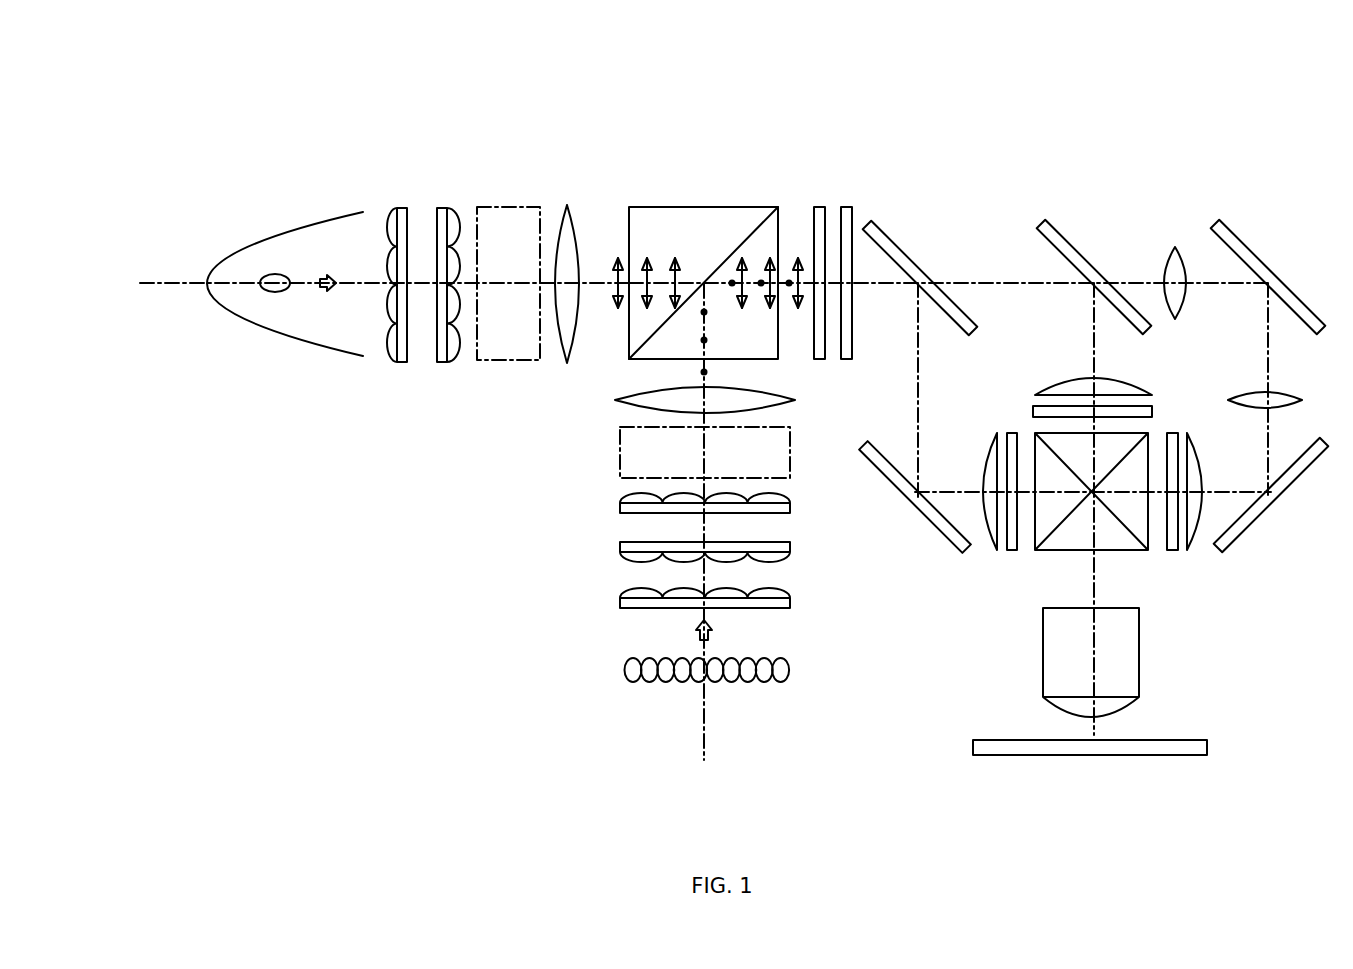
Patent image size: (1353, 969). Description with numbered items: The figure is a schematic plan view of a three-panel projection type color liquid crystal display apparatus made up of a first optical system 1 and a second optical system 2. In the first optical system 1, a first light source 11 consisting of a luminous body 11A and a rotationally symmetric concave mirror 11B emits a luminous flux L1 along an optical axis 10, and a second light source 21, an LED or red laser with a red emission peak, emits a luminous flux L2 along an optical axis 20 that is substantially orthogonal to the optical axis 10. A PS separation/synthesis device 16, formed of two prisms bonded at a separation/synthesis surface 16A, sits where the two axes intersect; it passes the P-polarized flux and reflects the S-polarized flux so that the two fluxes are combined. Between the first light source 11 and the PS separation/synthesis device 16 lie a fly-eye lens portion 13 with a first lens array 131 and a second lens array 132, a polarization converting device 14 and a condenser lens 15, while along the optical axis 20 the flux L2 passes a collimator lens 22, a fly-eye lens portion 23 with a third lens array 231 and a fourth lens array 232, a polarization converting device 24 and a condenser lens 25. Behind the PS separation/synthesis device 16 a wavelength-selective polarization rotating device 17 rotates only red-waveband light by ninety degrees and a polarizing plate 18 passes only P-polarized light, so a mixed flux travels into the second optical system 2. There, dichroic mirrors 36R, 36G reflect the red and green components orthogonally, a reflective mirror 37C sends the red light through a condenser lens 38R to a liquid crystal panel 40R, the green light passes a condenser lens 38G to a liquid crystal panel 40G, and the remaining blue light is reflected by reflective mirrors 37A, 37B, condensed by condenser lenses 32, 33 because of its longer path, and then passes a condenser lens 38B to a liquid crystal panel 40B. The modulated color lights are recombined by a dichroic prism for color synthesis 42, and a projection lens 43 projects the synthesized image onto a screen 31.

The first optical system 1 is at (149, 768).
The second optical system 2 is at (1325, 768).
The optical axis 10 is at (180, 262).
The first light source 11 is at (283, 317).
The luminous body 11A is at (275, 274).
The concave mirror 11B is at (256, 326).
The luminous flux L1 is at (322, 278).
The fly-eye lens portion 13 is at (424, 229).
The first lens array 131 is at (397, 207).
The second lens array 132 is at (461, 251).
The polarization converting device 14 is at (508, 207).
The condenser lens 15 is at (575, 232).
The PS separation/synthesis device 16 is at (743, 268).
The separation/synthesis surface 16A is at (703, 290).
The polarization rotating device 17 is at (818, 206).
The polarizing plate 18 is at (846, 206).
The optical axis 20 is at (707, 728).
The second light source 21 is at (655, 708).
The collimator lens 22 is at (620, 603).
The fly-eye lens portion 23 is at (637, 528).
The third lens array 231 is at (620, 548).
The fourth lens array 232 is at (620, 508).
The polarization converting device 24 is at (620, 452).
The condenser lens 25 is at (617, 400).
The luminous flux L2 is at (712, 630).
The screen 31 is at (1163, 747).
The condenser lens 32 is at (1176, 265).
The condenser lens 33 is at (1252, 396).
The dichroic mirror 36R is at (905, 258).
The dichroic mirror 36G is at (1078, 258).
The reflective mirror 37A is at (1252, 258).
The reflective mirror 37B is at (1273, 505).
The reflective mirror 37C is at (910, 500).
The condenser lens 38R is at (990, 460).
The condenser lens 38G is at (1105, 388).
The condenser lens 38B is at (1192, 528).
The liquid crystal panel 40R is at (1012, 435).
The liquid crystal panel 40G is at (1148, 410).
The liquid crystal panel 40B is at (1173, 552).
The dichroic prism for color synthesis 42 is at (1025, 575).
The projection lens 43 is at (1132, 650).